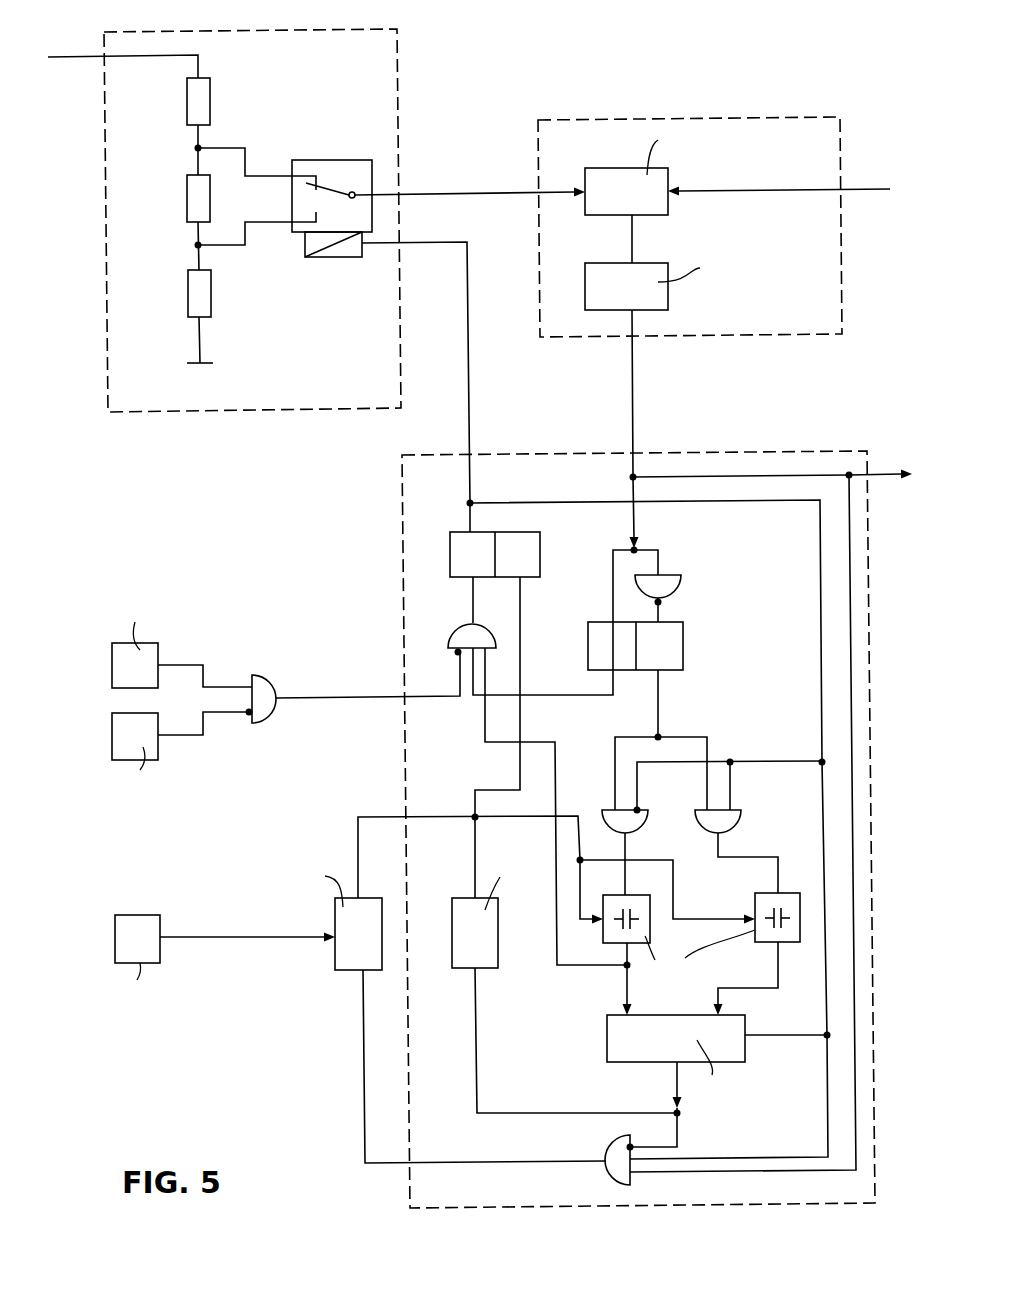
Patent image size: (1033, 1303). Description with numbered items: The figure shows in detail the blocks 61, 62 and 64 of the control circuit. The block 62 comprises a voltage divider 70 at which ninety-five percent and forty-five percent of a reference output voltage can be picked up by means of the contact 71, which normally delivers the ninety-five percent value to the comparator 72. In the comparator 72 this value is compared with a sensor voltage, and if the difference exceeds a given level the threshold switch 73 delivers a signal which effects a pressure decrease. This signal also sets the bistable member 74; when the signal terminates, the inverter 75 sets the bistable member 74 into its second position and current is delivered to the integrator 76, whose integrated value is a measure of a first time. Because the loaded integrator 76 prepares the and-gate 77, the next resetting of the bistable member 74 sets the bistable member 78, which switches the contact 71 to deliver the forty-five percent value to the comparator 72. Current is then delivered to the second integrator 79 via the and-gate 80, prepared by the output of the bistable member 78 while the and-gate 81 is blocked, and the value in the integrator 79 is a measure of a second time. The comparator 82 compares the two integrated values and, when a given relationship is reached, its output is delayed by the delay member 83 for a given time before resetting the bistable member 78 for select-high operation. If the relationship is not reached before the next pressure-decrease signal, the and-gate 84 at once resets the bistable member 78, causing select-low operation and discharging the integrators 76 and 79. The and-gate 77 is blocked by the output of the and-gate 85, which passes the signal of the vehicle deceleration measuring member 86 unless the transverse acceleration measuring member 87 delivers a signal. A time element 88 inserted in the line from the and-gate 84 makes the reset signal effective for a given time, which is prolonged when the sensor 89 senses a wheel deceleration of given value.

The block 61 is at (622, 118).
The block 62 is at (397, 62).
The block 64 is at (402, 555).
The voltage divider 70 is at (172, 78).
The contact 71 is at (338, 167).
The comparator 72 is at (610, 178).
The threshold switch 73 is at (603, 272).
The bistable member 74 is at (673, 648).
The inverter 75 is at (668, 585).
The integrator 76 is at (612, 933).
The and-gate 77 is at (466, 634).
The bistable member 78 is at (460, 538).
The second integrator 79 is at (763, 897).
The and-gate 80 is at (733, 822).
The and-gate 81 is at (608, 817).
The comparator 82 is at (617, 1037).
The delay member 83 is at (485, 945).
The and-gate 84 is at (612, 1172).
The and-gate 85 is at (262, 690).
The vehicle deceleration measuring member 86 is at (130, 670).
The transverse acceleration measuring member 87 is at (124, 730).
The time element 88 is at (345, 955).
The sensor 89 is at (128, 932).